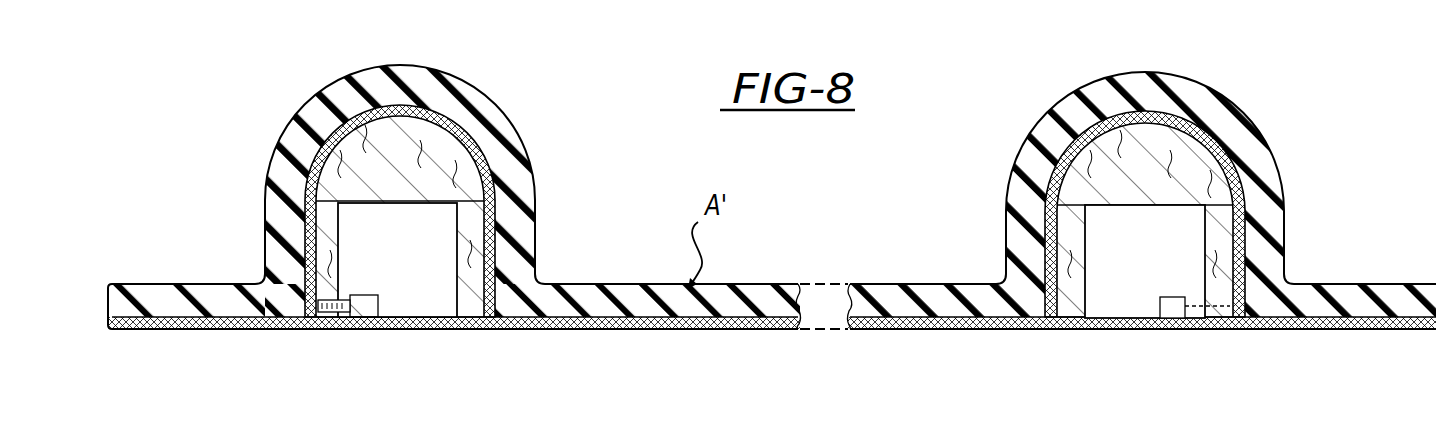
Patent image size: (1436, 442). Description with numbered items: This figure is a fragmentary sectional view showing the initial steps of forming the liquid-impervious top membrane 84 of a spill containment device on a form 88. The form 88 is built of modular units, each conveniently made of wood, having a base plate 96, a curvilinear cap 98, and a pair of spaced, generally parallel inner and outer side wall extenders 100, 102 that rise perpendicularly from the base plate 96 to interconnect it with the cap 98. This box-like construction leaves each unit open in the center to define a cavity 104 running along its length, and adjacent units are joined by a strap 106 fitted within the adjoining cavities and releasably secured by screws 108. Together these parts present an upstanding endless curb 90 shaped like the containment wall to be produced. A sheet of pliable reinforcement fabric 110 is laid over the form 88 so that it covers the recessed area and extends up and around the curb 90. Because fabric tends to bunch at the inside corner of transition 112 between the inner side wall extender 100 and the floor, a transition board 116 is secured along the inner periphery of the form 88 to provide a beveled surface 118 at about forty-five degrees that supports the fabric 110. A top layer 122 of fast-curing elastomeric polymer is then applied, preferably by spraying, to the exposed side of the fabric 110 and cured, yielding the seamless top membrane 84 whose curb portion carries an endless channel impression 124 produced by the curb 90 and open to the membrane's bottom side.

The top membrane 84 is at (523, 143).
The form 88 is at (306, 329).
The curb 90 is at (306, 164).
The base plate 96 is at (392, 330).
The curvilinear cap 98 is at (387, 117).
The inner side wall extender 100 is at (503, 222).
The outer side wall extender 102 is at (320, 210).
The cavity 104 is at (413, 246).
The strap 106 is at (385, 310).
The screws 108 is at (342, 330).
The reinforcement fabric 110 is at (463, 130).
The inside corner of transition 112 is at (483, 330).
The transition board 116 is at (500, 330).
The beveled surface 118 is at (512, 330).
The top layer 122 is at (527, 192).
The channel impression 124 is at (328, 142).